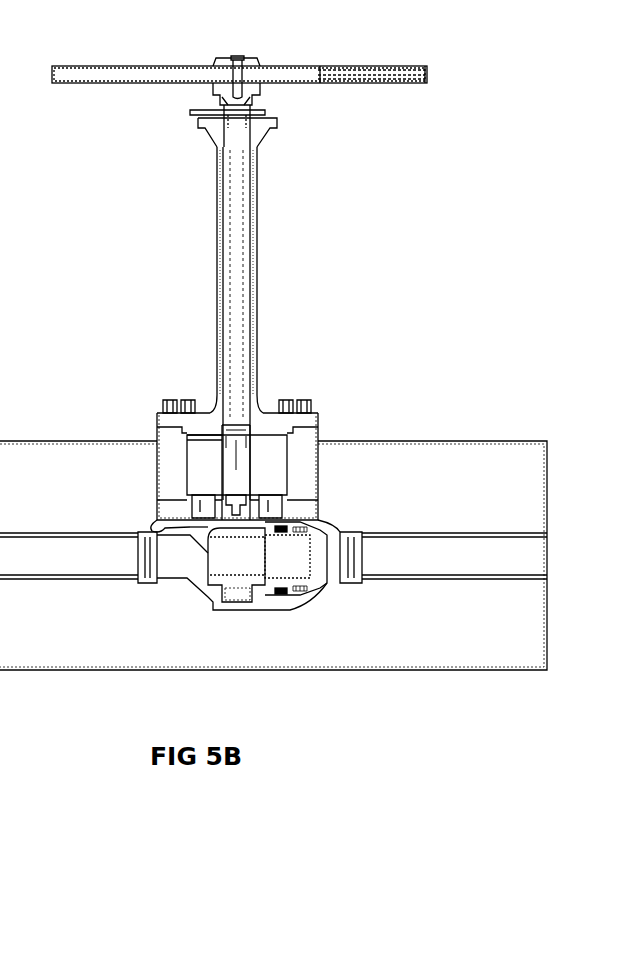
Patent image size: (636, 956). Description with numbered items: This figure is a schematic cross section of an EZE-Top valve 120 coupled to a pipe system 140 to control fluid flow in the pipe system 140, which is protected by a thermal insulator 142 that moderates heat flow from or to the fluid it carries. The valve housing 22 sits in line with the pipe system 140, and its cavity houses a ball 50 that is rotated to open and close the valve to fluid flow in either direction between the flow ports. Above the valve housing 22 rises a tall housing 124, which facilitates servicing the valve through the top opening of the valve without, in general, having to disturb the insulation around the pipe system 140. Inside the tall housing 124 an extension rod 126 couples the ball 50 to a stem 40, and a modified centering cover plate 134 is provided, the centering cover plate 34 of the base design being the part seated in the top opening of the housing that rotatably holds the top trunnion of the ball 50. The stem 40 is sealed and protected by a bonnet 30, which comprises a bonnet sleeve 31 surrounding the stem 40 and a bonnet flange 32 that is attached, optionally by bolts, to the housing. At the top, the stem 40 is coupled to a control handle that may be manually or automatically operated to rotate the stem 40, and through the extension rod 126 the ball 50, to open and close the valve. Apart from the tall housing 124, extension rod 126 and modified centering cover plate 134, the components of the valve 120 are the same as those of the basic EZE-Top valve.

The EZE-Top valve 120 is at (363, 297).
The bonnet 30 is at (185, 323).
The bonnet sleeve 31 is at (220, 337).
The bonnet flange 32 is at (195, 418).
The stem 40 is at (242, 312).
The tall housing 124 is at (303, 450).
The extension rod 126 is at (242, 478).
The modified centering cover plate 134 is at (200, 433).
The centering cover plate 34 is at (265, 513).
The pipe system 140 is at (393, 540).
The thermal insulator 142 is at (446, 626).
The valve housing 22 is at (310, 517).
The ball 50 is at (232, 577).